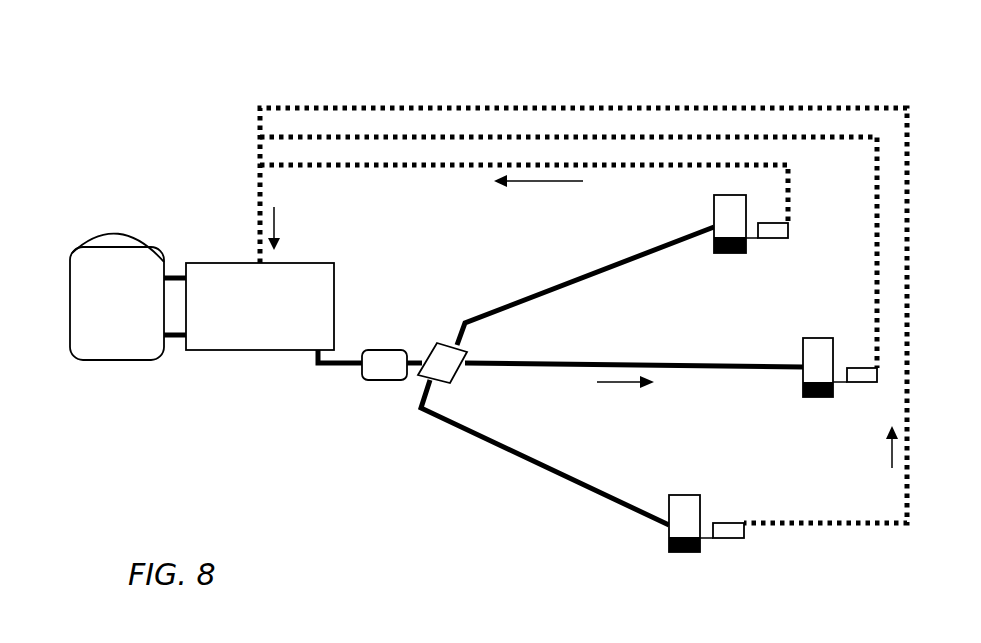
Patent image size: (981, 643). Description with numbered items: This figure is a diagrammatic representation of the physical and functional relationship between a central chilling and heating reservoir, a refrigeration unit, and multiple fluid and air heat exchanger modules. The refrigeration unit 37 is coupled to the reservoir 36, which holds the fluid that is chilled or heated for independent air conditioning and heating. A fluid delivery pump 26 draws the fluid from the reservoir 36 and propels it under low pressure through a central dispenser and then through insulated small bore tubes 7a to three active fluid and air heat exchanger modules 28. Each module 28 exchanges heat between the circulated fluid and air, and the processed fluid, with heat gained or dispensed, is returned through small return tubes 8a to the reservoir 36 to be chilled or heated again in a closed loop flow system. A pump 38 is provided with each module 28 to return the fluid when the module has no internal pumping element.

The small tube returning fluid from heat exchanger to reservoir 8a is at (580, 108).
The refrigeration unit 37 is at (117, 248).
The reservoir for independently functioning air conditioner and heater 36 is at (243, 318).
The fluid delivery pump 26 is at (378, 375).
The small tube carrying fluid from central reservoir to heat exchanger 7a is at (515, 455).
The active fluid and air heat exchanger module 28 is at (712, 237).
The pump for active fluid and air heat exchanger if no internal pump 38 is at (765, 238).